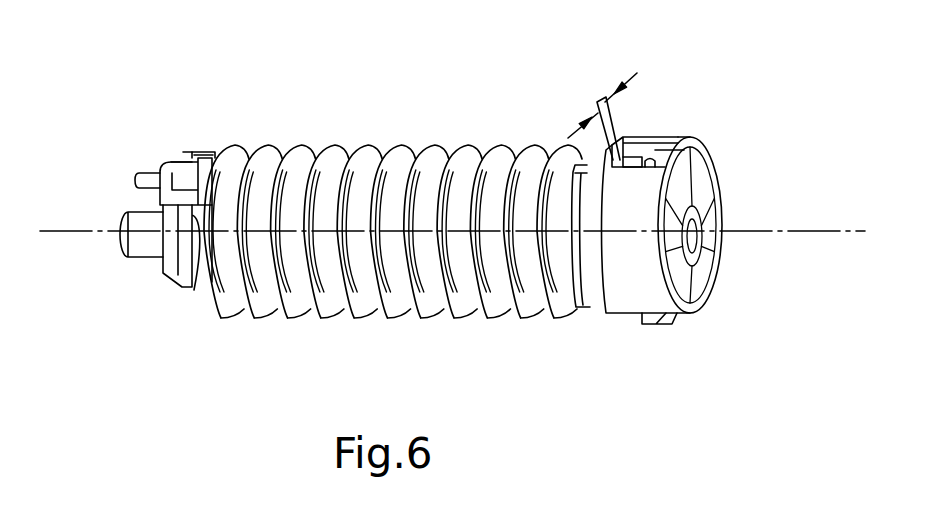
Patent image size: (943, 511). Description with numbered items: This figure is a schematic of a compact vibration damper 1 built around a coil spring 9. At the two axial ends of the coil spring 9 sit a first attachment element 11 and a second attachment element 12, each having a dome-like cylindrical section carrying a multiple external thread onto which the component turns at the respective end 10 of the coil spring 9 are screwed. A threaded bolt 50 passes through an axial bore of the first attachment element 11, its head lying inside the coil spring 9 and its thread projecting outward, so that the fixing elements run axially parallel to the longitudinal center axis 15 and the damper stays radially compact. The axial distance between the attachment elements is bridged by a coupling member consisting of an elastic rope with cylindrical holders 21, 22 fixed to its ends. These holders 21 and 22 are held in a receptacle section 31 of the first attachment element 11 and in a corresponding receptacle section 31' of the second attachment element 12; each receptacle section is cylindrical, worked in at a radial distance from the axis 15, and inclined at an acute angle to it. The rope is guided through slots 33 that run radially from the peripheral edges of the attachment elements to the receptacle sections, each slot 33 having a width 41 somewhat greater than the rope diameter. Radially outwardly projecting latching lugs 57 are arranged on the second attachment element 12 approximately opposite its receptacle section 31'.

The vibration damper 1 is at (393, 201).
The coil spring 9 is at (417, 309).
The end of the coil spring 10 is at (183, 288).
The first attachment element 11 is at (175, 260).
The second attachment element 12 is at (623, 287).
The longitudinal center axis 15 is at (783, 234).
The holder 21 is at (167, 162).
The holder 22 is at (640, 163).
The receptacle section 31 is at (157, 108).
The receptacle section 31' is at (719, 183).
The slot 33 is at (202, 152).
The width of the slot 41 is at (608, 138).
The threaded bolt 50 is at (136, 176).
The latching lugs 57 is at (662, 327).